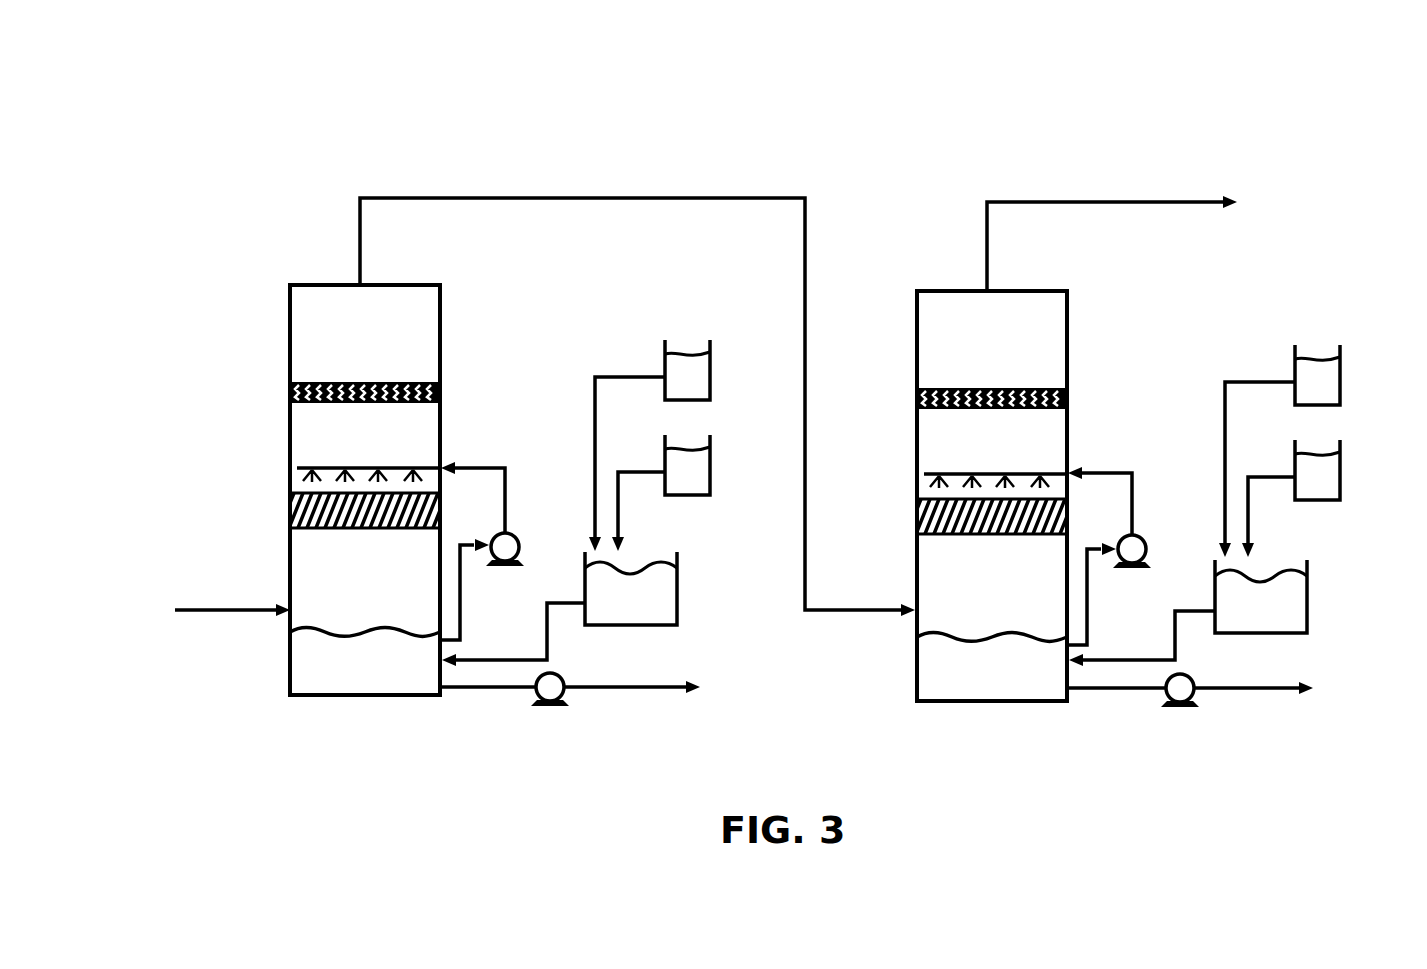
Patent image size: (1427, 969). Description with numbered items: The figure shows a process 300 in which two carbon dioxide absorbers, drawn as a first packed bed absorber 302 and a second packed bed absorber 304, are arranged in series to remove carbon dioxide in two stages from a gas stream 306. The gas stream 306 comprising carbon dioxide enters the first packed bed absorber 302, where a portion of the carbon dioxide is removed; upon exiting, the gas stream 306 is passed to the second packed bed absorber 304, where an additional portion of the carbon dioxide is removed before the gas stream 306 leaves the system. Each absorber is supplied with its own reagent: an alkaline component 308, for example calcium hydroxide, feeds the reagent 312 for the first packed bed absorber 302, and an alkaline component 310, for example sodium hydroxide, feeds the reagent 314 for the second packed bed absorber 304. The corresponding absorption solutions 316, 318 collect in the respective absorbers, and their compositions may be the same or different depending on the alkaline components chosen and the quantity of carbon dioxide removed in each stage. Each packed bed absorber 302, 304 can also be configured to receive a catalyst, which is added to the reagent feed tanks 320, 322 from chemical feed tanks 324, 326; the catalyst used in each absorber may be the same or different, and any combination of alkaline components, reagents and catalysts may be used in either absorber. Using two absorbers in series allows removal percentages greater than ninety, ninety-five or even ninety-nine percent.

The process 300 is at (345, 110).
The first packed bed absorber 302 is at (290, 362).
The second packed bed absorber 304 is at (917, 368).
The gas stream 306 is at (510, 198).
The alkaline component 308 is at (690, 384).
The alkaline component 310 is at (1315, 393).
The reagent 312 is at (648, 607).
The reagent 314 is at (1278, 613).
The absorption solution 316 is at (322, 673).
The absorption solution 318 is at (958, 680).
The reagent feed tank 320 is at (650, 625).
The reagent feed tank 322 is at (1280, 632).
The chemical feed tank 324 is at (710, 485).
The chemical feed tank 326 is at (1340, 490).